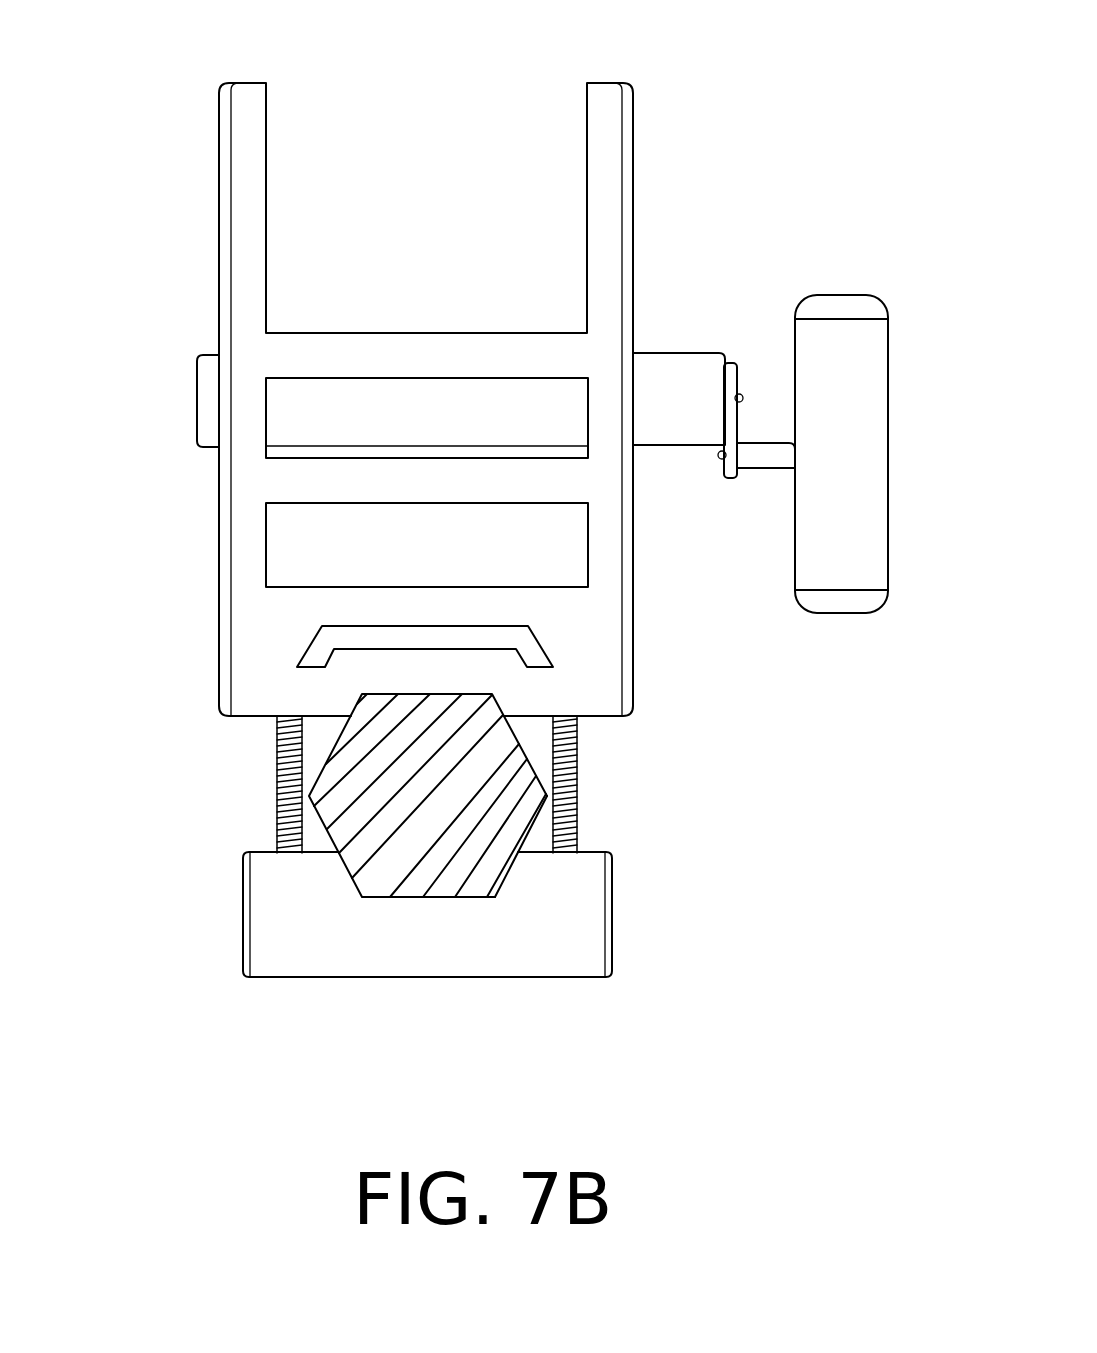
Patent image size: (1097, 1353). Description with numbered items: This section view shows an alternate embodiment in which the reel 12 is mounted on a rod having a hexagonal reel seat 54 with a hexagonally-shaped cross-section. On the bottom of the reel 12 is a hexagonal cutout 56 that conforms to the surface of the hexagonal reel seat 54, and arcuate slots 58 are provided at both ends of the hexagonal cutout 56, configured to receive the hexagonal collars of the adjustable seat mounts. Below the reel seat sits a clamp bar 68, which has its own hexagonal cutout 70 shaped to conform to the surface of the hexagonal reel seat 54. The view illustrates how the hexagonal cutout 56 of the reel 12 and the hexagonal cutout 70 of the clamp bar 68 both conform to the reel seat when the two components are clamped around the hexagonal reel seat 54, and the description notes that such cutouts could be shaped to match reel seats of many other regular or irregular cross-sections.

The reel 12 is at (600, 352).
The arcuate slots 58 is at (340, 635).
The hexagonal cutout 56 is at (352, 705).
The hexagonal reel seat 54 is at (418, 820).
The clamp bar 68 is at (577, 903).
The hexagonal cutout 70 is at (507, 880).